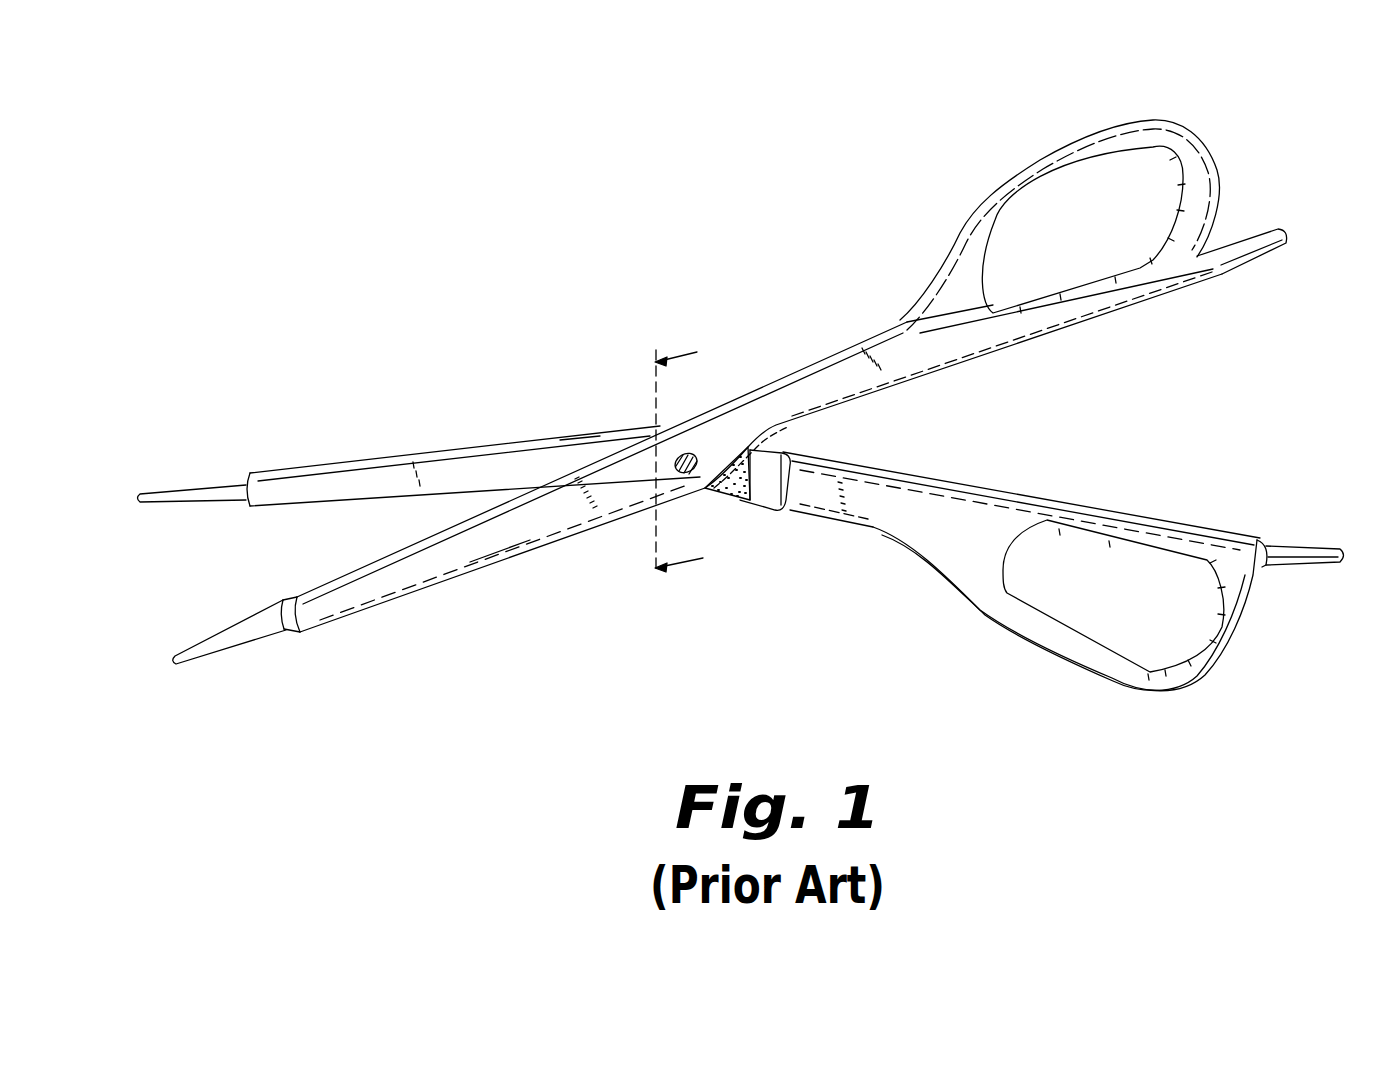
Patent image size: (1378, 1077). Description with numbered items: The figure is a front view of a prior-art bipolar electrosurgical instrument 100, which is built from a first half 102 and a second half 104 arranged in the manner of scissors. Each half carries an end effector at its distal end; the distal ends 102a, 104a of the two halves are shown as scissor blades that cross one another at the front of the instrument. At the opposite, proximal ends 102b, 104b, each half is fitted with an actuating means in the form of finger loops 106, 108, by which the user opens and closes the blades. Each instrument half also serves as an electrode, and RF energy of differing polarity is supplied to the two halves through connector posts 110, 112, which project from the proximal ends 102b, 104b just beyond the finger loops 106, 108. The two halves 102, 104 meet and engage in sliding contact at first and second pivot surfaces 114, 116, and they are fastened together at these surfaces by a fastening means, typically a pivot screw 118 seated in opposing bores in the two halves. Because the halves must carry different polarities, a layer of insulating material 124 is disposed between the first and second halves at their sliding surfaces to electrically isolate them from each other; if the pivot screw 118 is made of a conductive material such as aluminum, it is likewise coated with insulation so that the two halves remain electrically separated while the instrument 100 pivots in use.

The bipolar surgical instrument 100 is at (395, 230).
The first half 102 is at (793, 330).
The distal end of the first half 102a is at (239, 678).
The proximal end of the first half 102b is at (1117, 102).
The second half 104 is at (799, 549).
The distal end of the second half 104a is at (179, 459).
The proximal end of the second half 104b is at (1117, 704).
The finger loop 106 is at (1096, 249).
The finger loop 108 is at (1134, 585).
The connector post 110 is at (1281, 232).
The connector post 112 is at (1322, 556).
The first pivot surface 114 is at (527, 470).
The second pivot surface 116 is at (568, 462).
The pivot screw 118 is at (673, 462).
The insulating material 124 is at (735, 505).